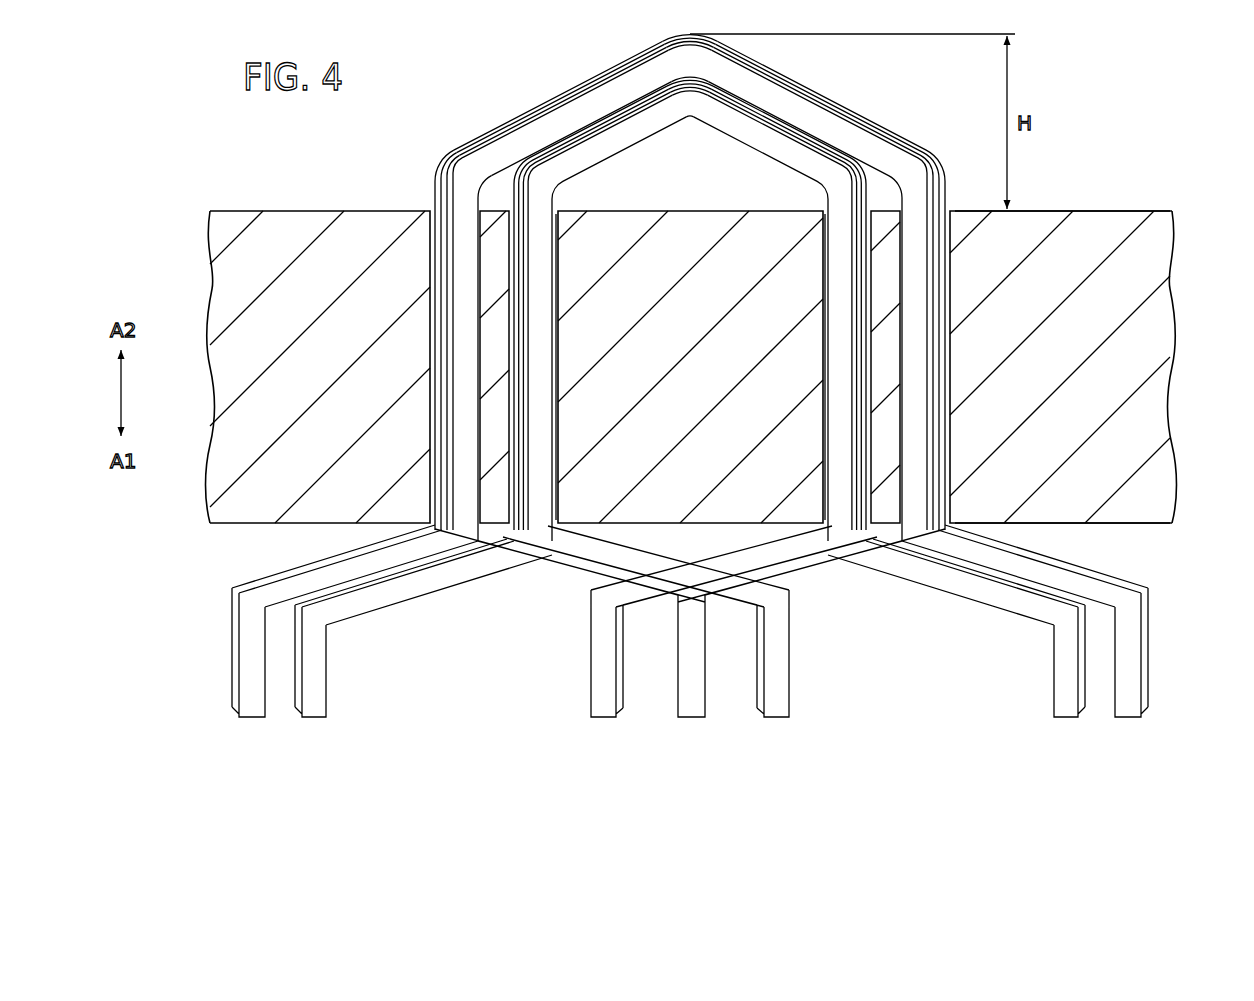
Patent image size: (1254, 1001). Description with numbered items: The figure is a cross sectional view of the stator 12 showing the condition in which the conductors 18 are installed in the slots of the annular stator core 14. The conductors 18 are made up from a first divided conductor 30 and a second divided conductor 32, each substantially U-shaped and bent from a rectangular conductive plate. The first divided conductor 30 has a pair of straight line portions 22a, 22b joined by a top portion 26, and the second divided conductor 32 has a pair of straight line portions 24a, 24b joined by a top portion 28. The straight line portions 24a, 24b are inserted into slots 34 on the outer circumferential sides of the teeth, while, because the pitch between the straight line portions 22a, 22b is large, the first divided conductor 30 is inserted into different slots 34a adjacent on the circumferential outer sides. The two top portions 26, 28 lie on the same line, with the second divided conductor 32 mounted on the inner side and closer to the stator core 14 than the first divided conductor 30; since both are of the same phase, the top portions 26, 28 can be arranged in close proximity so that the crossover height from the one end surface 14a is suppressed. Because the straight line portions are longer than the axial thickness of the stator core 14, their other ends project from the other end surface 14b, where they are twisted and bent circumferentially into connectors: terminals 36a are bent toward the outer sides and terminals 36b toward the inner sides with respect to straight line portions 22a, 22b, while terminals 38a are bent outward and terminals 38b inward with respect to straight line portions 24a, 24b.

The stator 12 is at (321, 207).
The stator core 14 is at (1163, 400).
The one end surface 14a is at (1134, 210).
The another end surface 14b is at (1113, 525).
The conductors 18 is at (547, 72).
The straight line portion 22a is at (511, 292).
The straight line portion 22b is at (922, 352).
The straight line portion 24a is at (545, 323).
The straight line portion 24b is at (842, 283).
The top portion 26 is at (692, 57).
The top portion 28 is at (690, 105).
The first divided conductor 30 is at (499, 133).
The second divided conductor 32 is at (556, 426).
The slot 34 is at (545, 282).
The slot 34a is at (463, 400).
The terminal 36a is at (250, 677).
The terminal 36b is at (690, 705).
The terminal 38a is at (318, 682).
The terminal 38b is at (605, 677).